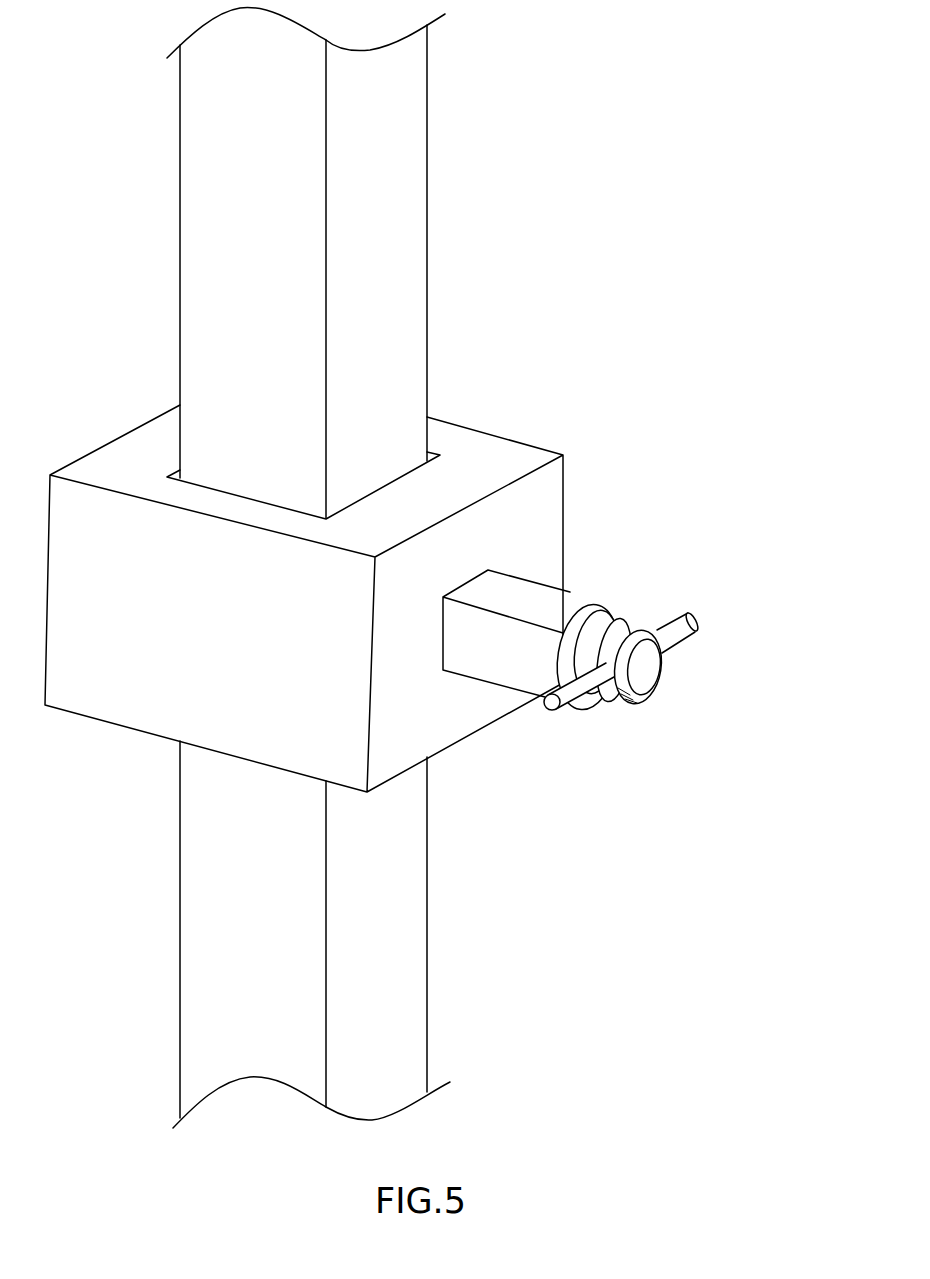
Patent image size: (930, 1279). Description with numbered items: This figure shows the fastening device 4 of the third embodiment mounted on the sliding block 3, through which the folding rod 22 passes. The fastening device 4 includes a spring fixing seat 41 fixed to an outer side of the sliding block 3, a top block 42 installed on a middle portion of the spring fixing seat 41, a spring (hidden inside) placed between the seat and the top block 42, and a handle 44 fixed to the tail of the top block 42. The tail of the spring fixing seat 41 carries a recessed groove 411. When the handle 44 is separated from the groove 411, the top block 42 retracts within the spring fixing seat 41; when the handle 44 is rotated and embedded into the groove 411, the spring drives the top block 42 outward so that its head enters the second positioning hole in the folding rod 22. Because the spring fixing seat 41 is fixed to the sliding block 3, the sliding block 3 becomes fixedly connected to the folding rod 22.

The folding rod 22 is at (393, 248).
The sliding block 3 is at (510, 463).
The fastening device 4 is at (621, 694).
The spring fixing seat 41 is at (567, 605).
The groove 411 is at (633, 695).
The top block 42 is at (652, 673).
The handle 44 is at (693, 627).